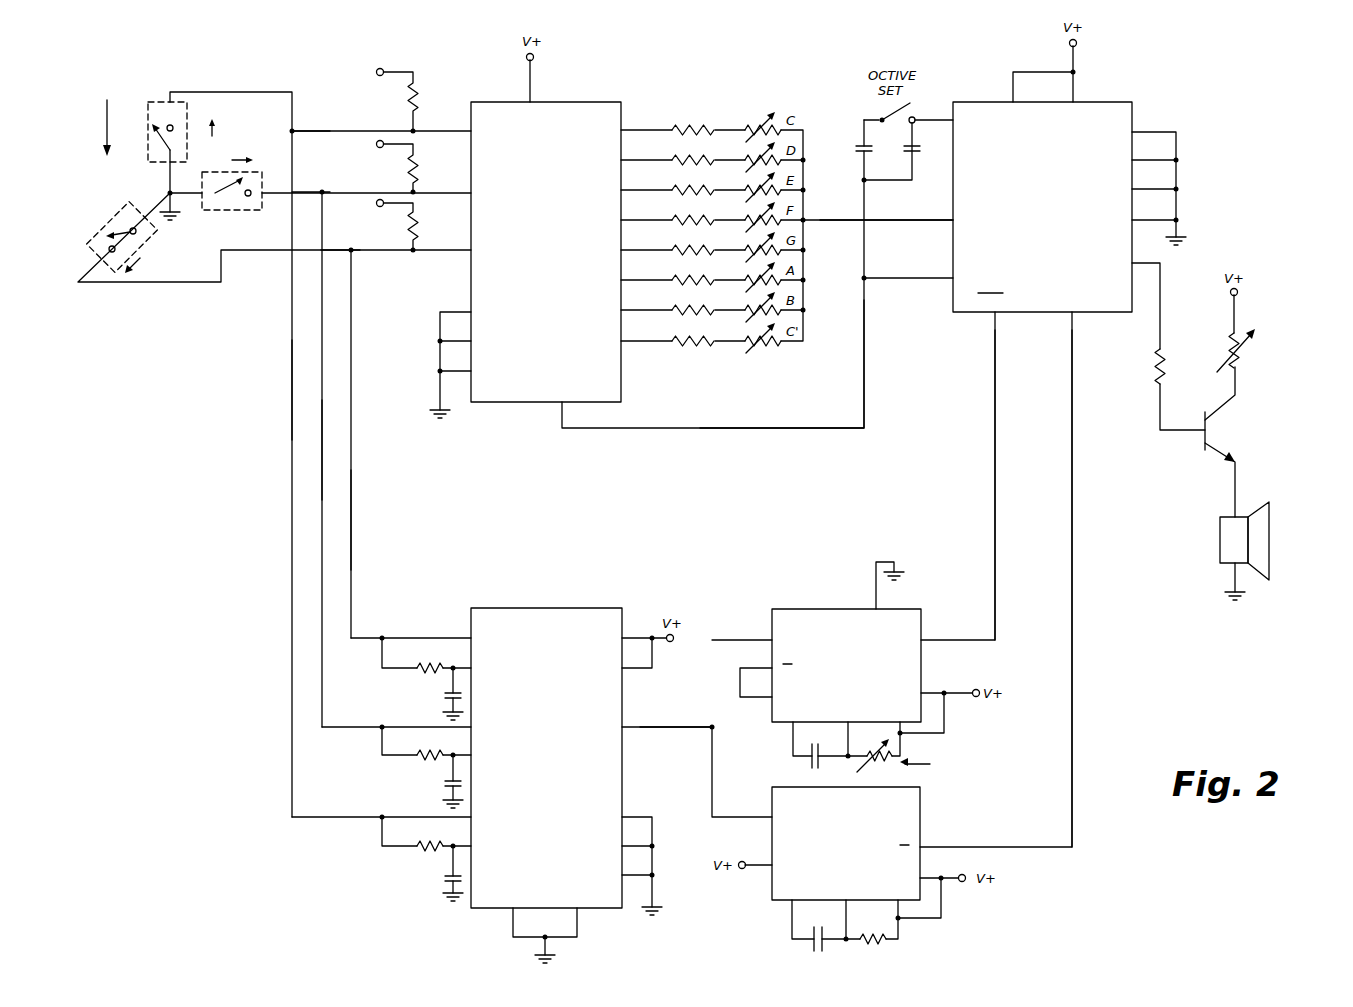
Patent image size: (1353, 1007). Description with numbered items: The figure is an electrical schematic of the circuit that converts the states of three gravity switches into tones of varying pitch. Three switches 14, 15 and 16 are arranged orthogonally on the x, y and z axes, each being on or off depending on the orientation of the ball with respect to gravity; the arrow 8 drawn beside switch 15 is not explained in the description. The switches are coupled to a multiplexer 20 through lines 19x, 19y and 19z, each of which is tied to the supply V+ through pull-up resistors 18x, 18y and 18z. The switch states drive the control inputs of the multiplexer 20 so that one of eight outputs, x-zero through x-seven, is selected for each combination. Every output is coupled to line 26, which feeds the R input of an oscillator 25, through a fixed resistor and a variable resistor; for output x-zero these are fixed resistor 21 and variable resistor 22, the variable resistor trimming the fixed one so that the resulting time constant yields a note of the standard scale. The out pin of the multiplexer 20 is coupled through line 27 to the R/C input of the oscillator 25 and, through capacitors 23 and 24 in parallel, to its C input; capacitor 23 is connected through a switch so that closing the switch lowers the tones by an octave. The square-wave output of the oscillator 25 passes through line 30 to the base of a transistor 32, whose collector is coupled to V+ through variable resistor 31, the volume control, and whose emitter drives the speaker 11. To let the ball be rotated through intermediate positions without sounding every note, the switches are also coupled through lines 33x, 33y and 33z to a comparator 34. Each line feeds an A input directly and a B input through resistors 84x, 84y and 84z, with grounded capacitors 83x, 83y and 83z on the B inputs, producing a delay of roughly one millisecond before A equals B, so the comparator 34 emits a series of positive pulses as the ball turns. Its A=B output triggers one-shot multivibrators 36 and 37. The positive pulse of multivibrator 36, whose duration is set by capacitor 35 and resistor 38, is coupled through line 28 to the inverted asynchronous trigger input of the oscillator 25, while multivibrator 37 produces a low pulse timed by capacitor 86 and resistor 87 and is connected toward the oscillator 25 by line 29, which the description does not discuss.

The direction arrow 8 is at (92, 128).
The speaker 11 is at (1270, 507).
The switch 14 is at (263, 129).
The switch 15 is at (158, 100).
The switch 16 is at (108, 224).
The pull-up resistor 18x is at (419, 174).
The pull-up resistor 18y is at (420, 100).
The pull-up resistor 18z is at (419, 236).
The line 19x is at (322, 190).
The line 19y is at (338, 130).
The line 19z is at (351, 249).
The multiplexer 20 is at (585, 100).
The fixed resistor 21 is at (719, 113).
The variable resistor 22 is at (742, 97).
The capacitor 23 is at (859, 152).
The capacitor 24 is at (916, 154).
The oscillator 25 is at (1123, 102).
The line 26 is at (911, 222).
The line 27 is at (865, 415).
The line 28 is at (995, 461).
The reset line 29 is at (1072, 500).
The line 30 is at (1162, 328).
The variable resistor 31 is at (1243, 332).
The transistor 32 is at (1210, 430).
The line 33x is at (320, 440).
The line 33y is at (291, 387).
The line 33z is at (352, 527).
The comparator 34 is at (592, 608).
The capacitor 35 is at (671, 726).
The one-shot multivibrator 36 is at (820, 608).
The multivibrator 37 is at (782, 900).
The resistor 38 is at (890, 766).
The capacitor 83x is at (447, 784).
The capacitor 83y is at (447, 878).
The capacitor 83z is at (447, 695).
The resistor 84x is at (416, 754).
The resistor 84y is at (413, 846).
The resistor 84z is at (432, 661).
The capacitor 86 is at (821, 945).
The resistor 87 is at (881, 945).